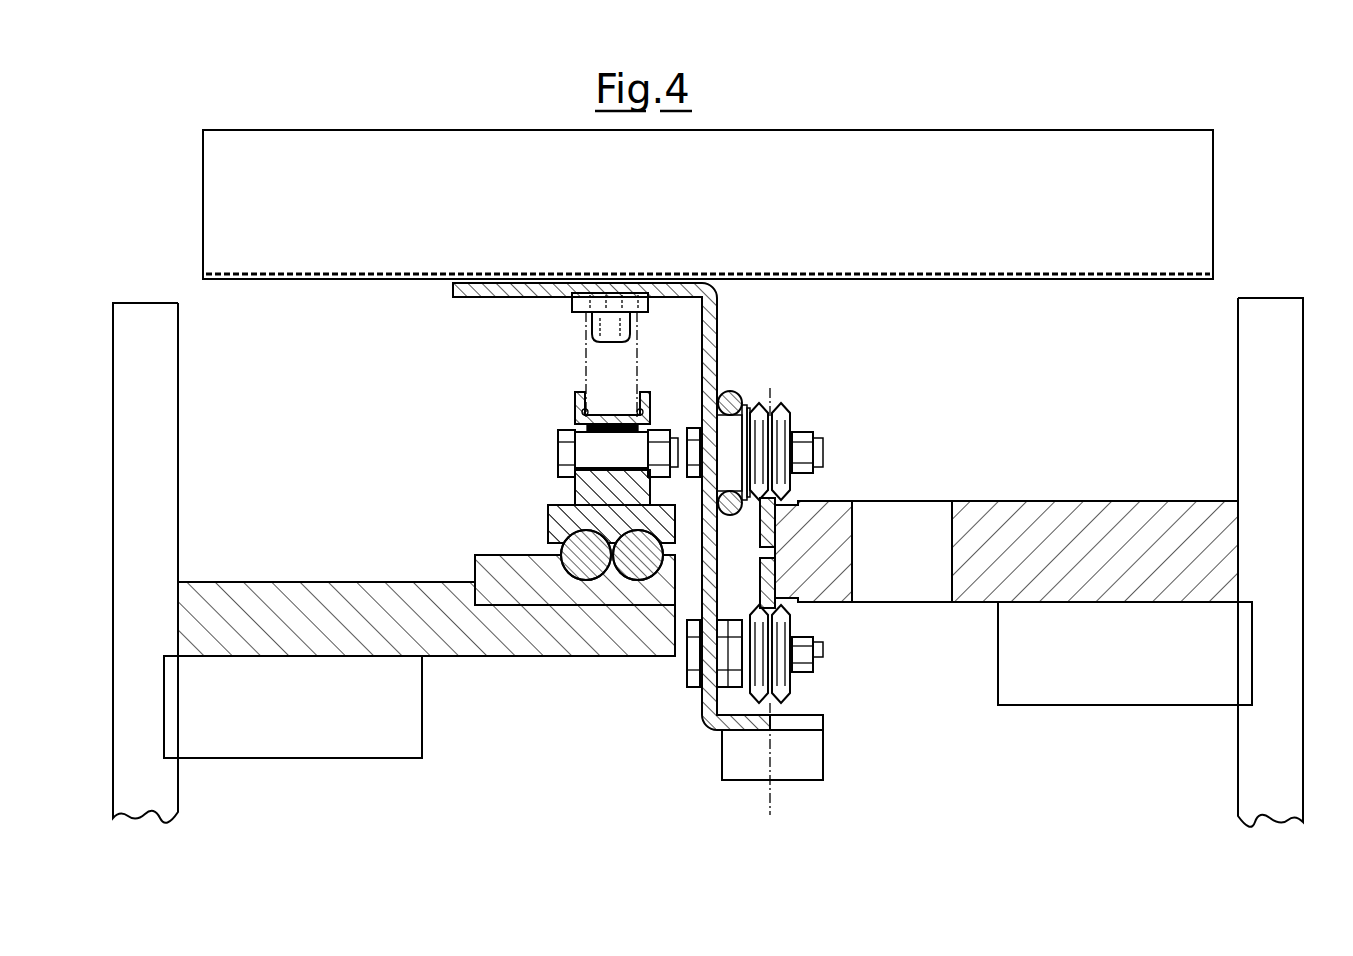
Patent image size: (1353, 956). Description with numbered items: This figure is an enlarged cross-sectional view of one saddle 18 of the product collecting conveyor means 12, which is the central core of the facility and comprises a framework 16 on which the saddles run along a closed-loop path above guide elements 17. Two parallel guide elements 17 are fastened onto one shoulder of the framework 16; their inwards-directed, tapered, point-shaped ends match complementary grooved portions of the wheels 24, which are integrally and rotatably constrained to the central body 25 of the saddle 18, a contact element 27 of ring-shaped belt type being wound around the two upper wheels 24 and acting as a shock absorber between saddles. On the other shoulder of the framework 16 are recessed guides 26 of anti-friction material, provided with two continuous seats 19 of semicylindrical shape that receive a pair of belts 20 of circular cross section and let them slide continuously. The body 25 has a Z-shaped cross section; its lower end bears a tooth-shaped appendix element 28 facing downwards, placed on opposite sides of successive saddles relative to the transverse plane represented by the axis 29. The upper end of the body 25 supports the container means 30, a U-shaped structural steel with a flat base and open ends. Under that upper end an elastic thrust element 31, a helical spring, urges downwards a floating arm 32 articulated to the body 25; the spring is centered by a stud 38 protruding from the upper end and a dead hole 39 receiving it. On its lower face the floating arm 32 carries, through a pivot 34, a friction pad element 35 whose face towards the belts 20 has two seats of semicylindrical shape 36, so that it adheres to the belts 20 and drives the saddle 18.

The product collecting conveyor means 12 is at (258, 92).
The framework 16 is at (162, 406).
The guide elements 17 is at (782, 530).
The saddle 18 is at (693, 710).
The continuous seats 19 is at (578, 578).
The belts 20 is at (630, 556).
The wheels 24 is at (778, 414).
The central body 25 is at (720, 316).
The recessed guides 26 is at (496, 565).
The contact element 27 is at (733, 392).
The tooth-shaped appendix element 28 is at (758, 768).
The axis 29 is at (776, 796).
The container means 30 is at (470, 138).
The elastic thrust element 31 is at (584, 356).
The floating arm 32 is at (578, 400).
The pivot 34 is at (585, 450).
The friction pad element 35 is at (560, 506).
The seats of semicylindrical shape 36 is at (555, 538).
The stud 38 is at (592, 334).
The dead hole 39 is at (632, 398).